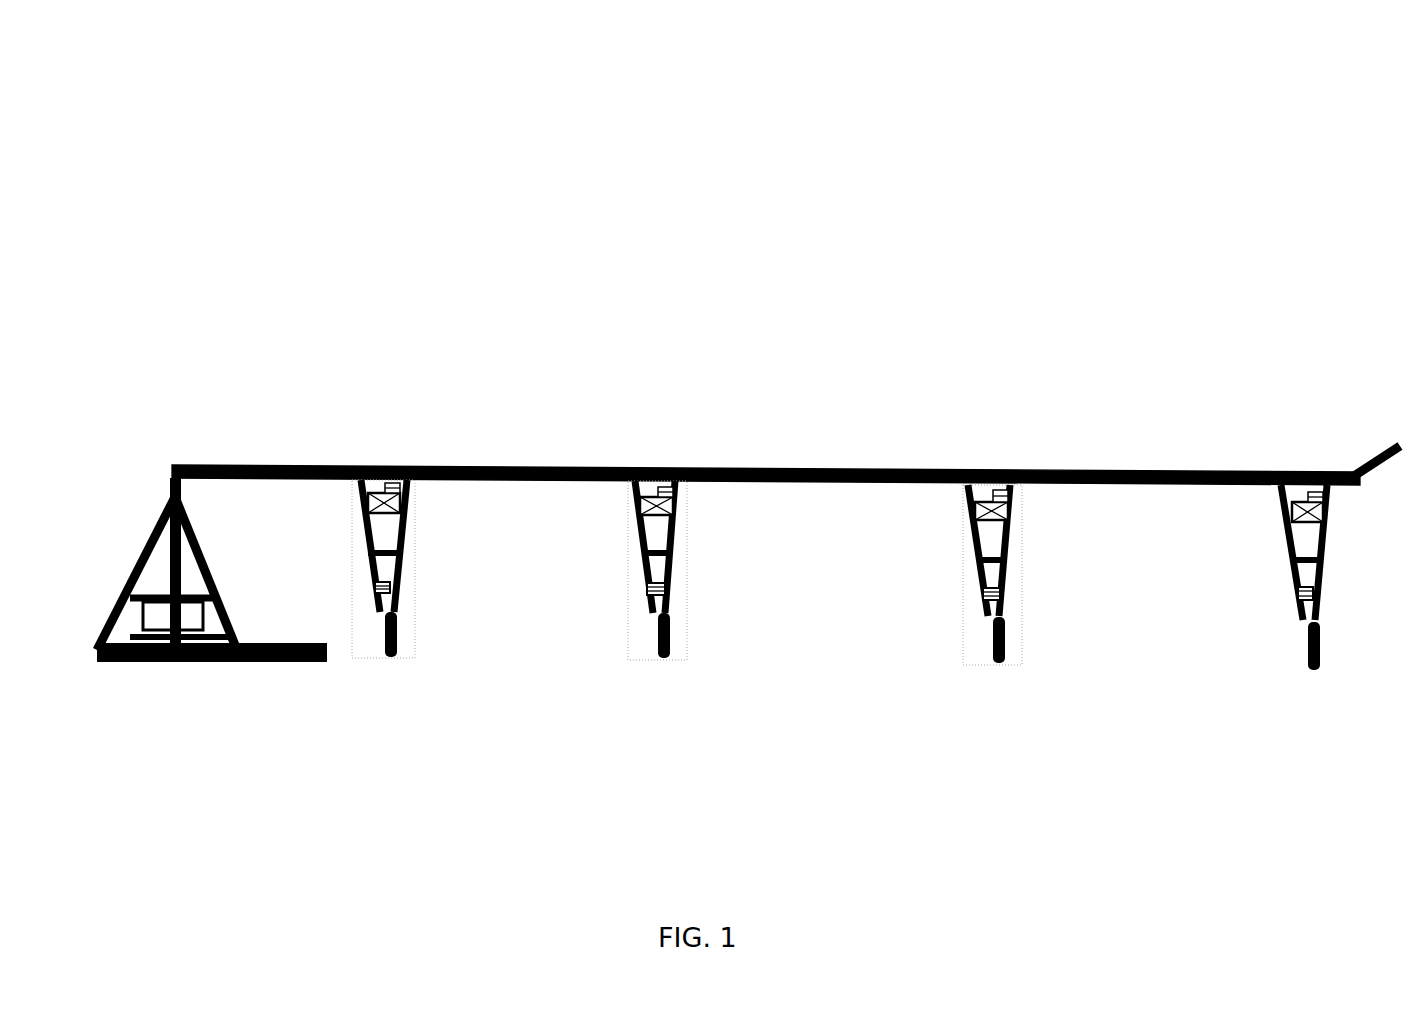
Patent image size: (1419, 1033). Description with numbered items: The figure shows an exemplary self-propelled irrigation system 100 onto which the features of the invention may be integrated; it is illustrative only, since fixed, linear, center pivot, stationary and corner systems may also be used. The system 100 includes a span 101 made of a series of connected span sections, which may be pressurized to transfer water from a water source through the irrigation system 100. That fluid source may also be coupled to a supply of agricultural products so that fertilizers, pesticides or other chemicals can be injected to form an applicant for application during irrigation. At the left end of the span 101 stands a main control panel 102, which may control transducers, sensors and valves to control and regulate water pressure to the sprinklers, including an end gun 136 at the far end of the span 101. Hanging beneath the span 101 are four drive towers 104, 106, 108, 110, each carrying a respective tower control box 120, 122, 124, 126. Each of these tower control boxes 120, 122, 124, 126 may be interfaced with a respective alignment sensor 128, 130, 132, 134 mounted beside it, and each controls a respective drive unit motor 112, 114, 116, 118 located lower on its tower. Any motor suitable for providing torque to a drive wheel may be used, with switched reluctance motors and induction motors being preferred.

The self-propelled irrigation system 100 is at (764, 100).
The span 101 is at (255, 468).
The main control panel 102 is at (170, 625).
The drive tower 104 is at (441, 560).
The drive tower 106 is at (711, 565).
The drive tower 108 is at (1039, 558).
The drive tower 110 is at (1304, 550).
The drive unit motor 112 is at (392, 590).
The drive unit motor 114 is at (665, 592).
The drive unit motor 116 is at (1000, 597).
The drive unit motor 118 is at (1313, 595).
The tower control box 120 is at (370, 497).
The tower control box 122 is at (640, 500).
The tower control box 124 is at (975, 505).
The tower control box 126 is at (1292, 510).
The alignment sensor 128 is at (402, 487).
The alignment sensor 130 is at (675, 495).
The alignment sensor 132 is at (1008, 493).
The alignment sensor 134 is at (1323, 492).
The end gun 136 is at (1385, 445).